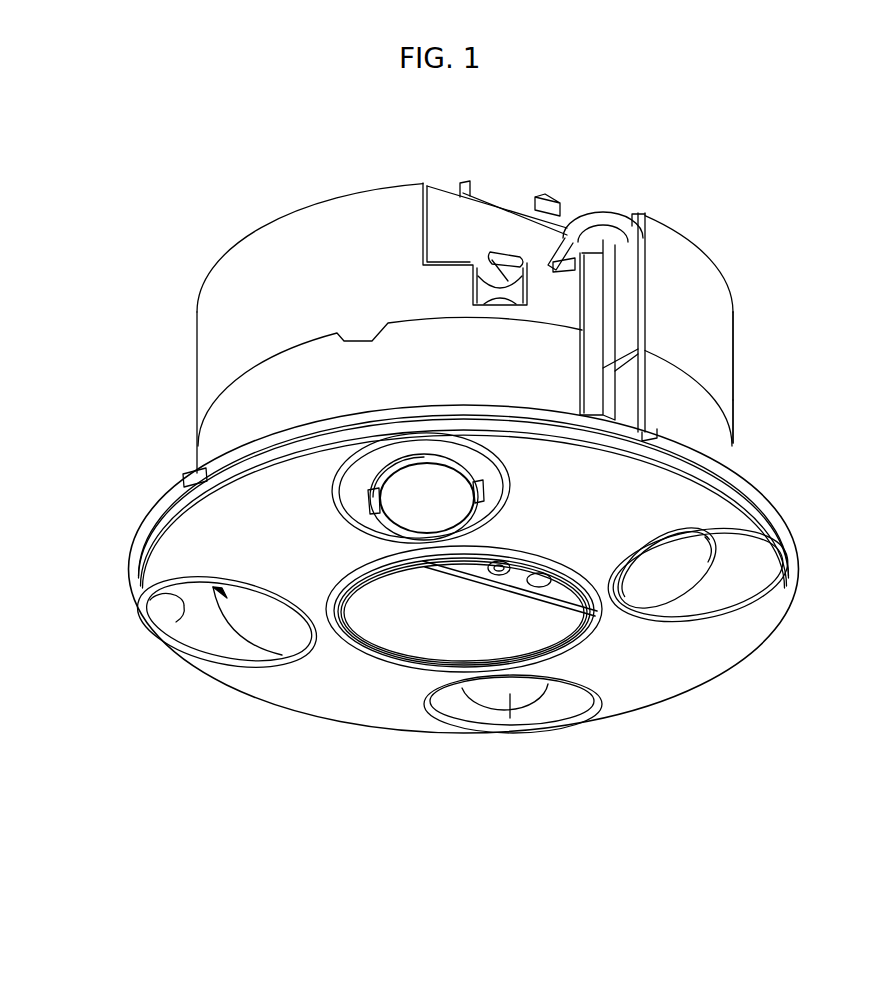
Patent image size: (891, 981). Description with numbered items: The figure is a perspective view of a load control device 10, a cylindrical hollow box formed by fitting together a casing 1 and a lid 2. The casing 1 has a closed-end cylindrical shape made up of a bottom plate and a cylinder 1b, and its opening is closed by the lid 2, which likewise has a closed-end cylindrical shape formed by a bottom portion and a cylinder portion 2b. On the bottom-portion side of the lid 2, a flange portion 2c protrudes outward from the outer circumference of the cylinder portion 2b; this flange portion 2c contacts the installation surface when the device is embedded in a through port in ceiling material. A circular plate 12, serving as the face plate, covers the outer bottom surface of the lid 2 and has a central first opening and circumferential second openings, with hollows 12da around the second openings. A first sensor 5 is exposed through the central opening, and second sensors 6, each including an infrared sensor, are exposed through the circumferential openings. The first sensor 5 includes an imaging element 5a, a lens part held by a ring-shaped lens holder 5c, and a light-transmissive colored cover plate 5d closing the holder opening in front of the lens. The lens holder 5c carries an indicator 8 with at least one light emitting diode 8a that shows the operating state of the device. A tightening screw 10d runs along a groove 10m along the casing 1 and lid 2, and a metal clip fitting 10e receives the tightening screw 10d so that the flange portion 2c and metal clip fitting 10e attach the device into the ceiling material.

The load control device 10 is at (752, 201).
The casing 1 is at (218, 330).
The cylinder 1b is at (722, 331).
The lid 2 is at (212, 448).
The cylinder portion 2b is at (716, 441).
The flange portion 2c is at (783, 516).
The plate 12 is at (662, 684).
The hollows 12da is at (186, 612).
The second sensors 6 is at (257, 626).
The first sensor 5 is at (393, 623).
The imaging element 5a is at (442, 620).
The lens holder 5c is at (568, 594).
The cover plate 5d is at (575, 636).
The indicator 8 is at (545, 569).
The light emitting diode 8a is at (521, 561).
The tightening screw 10d is at (592, 315).
The metal clip fitting 10e is at (500, 262).
The groove 10m is at (626, 396).